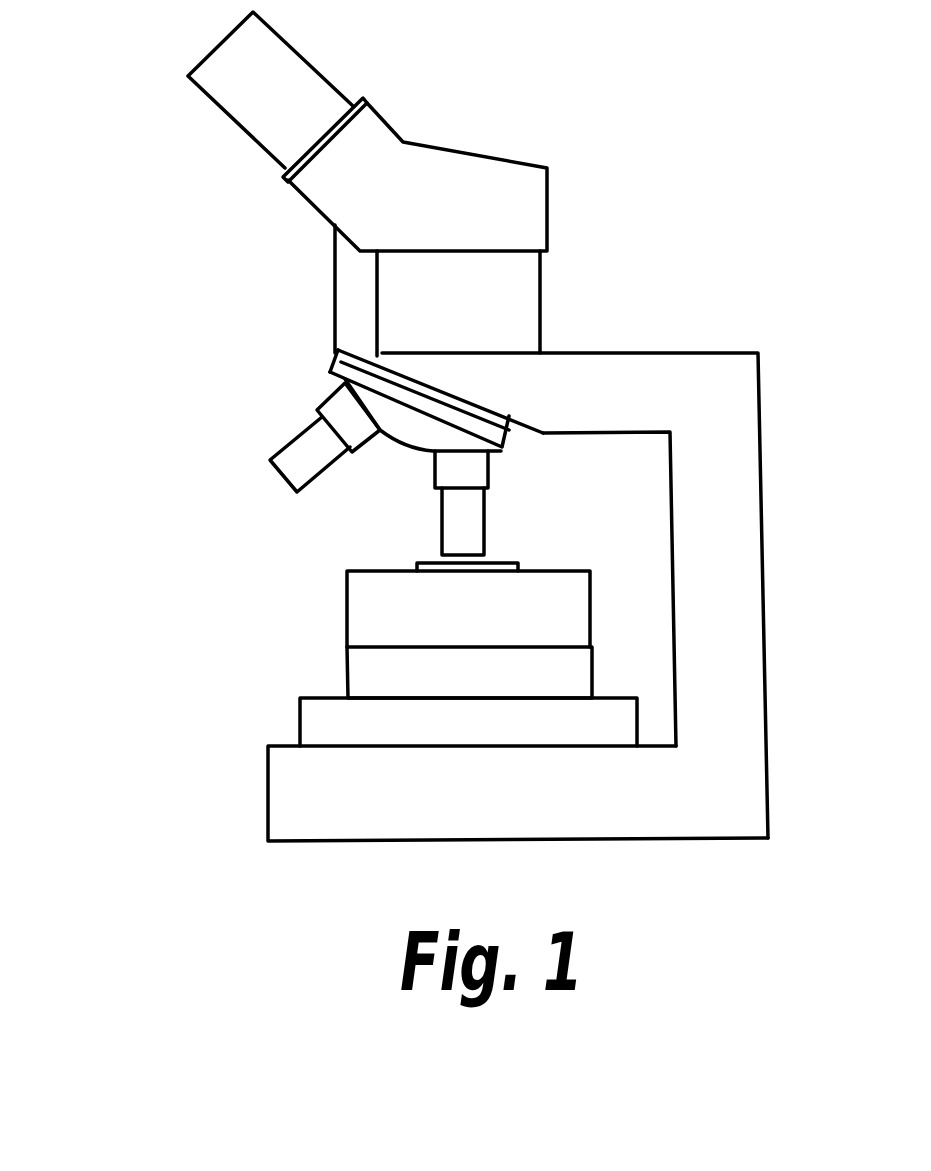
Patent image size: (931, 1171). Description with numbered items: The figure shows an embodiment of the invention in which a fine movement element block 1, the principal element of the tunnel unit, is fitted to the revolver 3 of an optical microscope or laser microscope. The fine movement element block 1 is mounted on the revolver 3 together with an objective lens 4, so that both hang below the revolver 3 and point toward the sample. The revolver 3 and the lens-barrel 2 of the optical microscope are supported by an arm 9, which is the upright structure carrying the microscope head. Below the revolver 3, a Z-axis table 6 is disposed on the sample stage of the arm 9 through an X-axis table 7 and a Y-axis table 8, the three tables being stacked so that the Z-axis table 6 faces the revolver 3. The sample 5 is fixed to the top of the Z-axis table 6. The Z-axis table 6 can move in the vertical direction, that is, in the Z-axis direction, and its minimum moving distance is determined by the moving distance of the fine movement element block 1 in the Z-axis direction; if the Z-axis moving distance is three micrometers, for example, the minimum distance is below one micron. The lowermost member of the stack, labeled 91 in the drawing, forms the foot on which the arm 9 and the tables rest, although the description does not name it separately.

The fine movement element block 1 is at (448, 532).
The lens-barrel 2 is at (507, 168).
The revolver 3 is at (337, 357).
The objective lens 4 is at (283, 448).
The sample 5 is at (417, 565).
The Z-axis table 6 is at (353, 623).
The X-axis table 7 is at (350, 673).
The Y-axis table 8 is at (305, 728).
The arm 9 is at (745, 603).
The base 91 is at (277, 792).